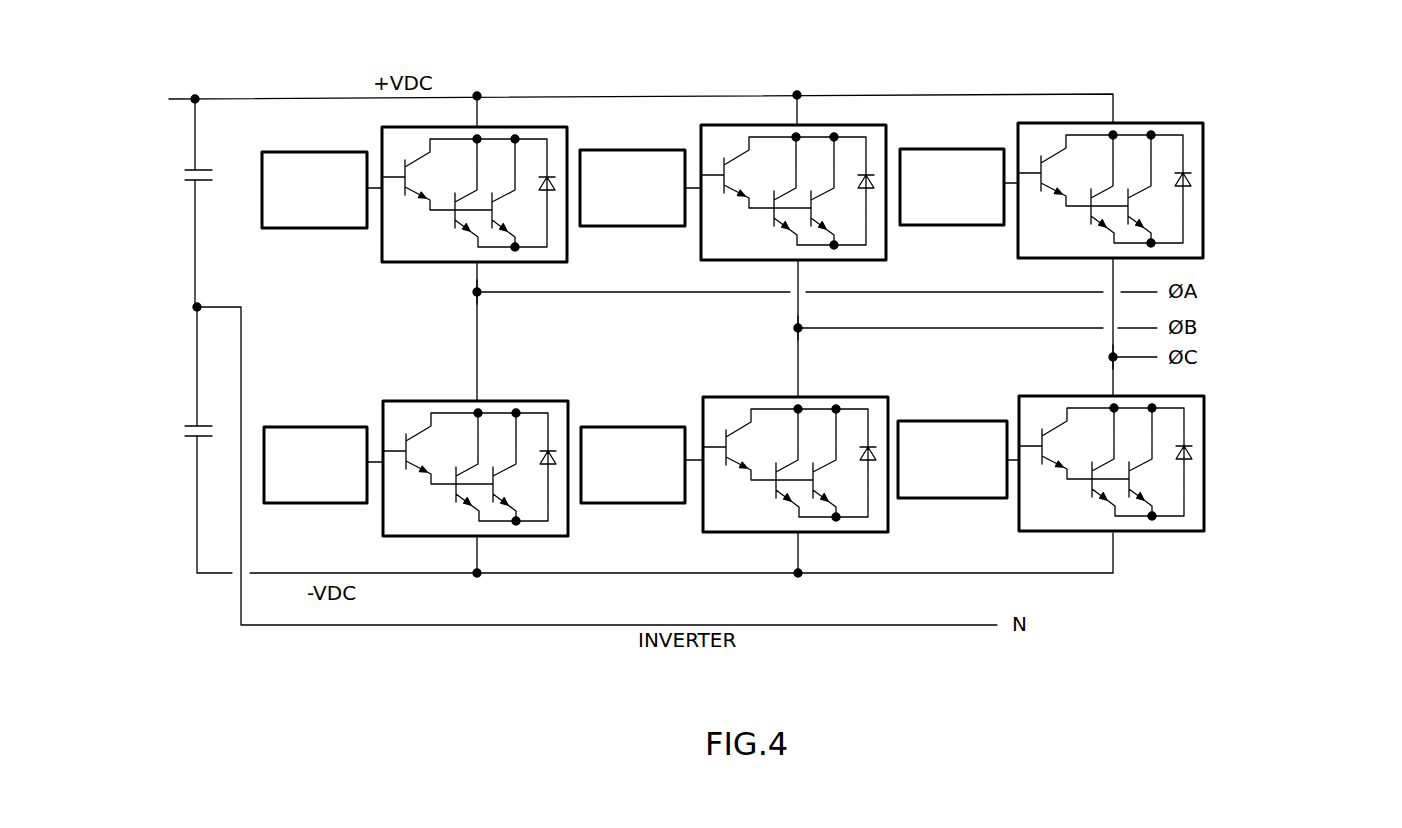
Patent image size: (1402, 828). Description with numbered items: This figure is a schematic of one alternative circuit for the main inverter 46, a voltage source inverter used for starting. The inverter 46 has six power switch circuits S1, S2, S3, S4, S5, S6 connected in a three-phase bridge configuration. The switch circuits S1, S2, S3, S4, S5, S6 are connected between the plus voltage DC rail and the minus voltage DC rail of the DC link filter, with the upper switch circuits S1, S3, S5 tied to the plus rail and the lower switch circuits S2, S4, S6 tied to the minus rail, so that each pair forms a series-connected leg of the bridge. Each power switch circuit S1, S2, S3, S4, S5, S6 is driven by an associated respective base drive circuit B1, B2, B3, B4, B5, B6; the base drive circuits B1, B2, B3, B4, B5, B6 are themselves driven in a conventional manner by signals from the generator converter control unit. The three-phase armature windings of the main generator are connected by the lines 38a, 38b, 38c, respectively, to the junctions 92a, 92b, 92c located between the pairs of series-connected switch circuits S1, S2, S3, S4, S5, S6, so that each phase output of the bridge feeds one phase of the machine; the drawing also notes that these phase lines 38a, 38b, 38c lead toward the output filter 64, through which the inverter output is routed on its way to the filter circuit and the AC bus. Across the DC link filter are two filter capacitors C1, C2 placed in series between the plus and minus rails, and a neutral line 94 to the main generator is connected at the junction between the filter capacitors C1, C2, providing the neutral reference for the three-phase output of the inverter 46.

The main inverter 46 is at (380, 650).
The neutral line 94 is at (833, 625).
The filter capacitor C1 is at (178, 177).
The filter capacitor C2 is at (178, 433).
The base drive circuit B1 is at (303, 152).
The base drive circuit B2 is at (308, 427).
The base drive circuit B3 is at (627, 150).
The base drive circuit B4 is at (625, 427).
The base drive circuit B5 is at (963, 149).
The base drive circuit B6 is at (957, 421).
The power switch circuit S1 is at (567, 134).
The power switch circuit S2 is at (567, 401).
The power switch circuit S3 is at (886, 131).
The power switch circuit S4 is at (886, 397).
The power switch circuit S5 is at (1204, 126).
The power switch circuit S6 is at (1205, 400).
The junction 92a is at (480, 295).
The junction 92b is at (801, 331).
The junction 92c is at (1105, 357).
The line 38a is at (1140, 291).
The line 38b is at (1142, 326).
The line 38c is at (1133, 362).
The output filter 64 is at (1375, 338).